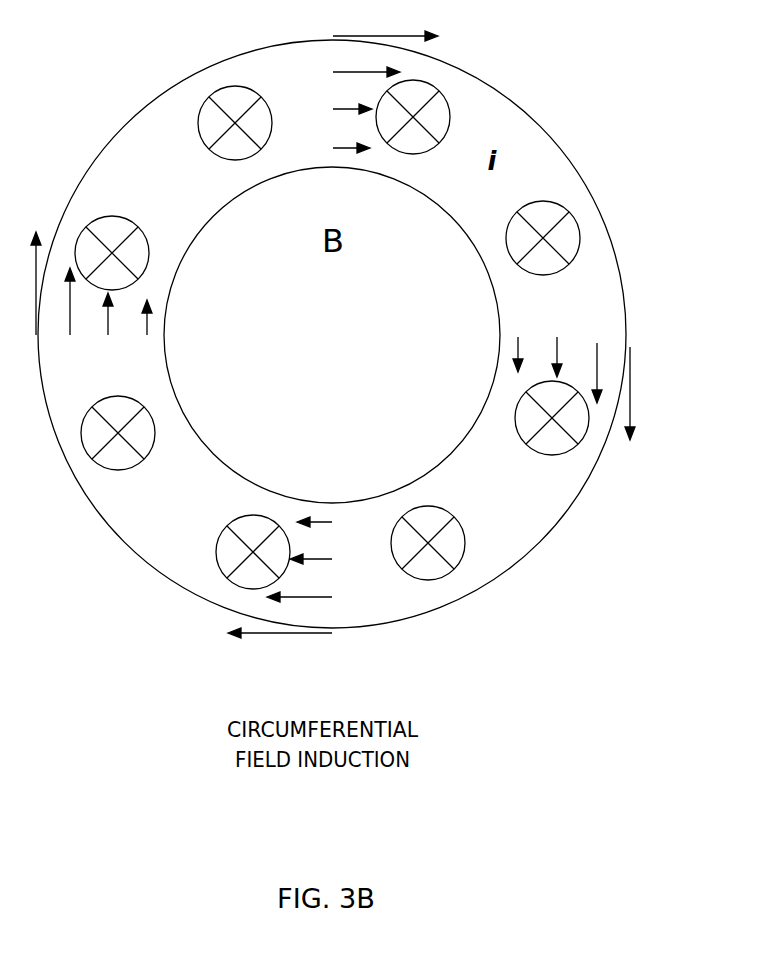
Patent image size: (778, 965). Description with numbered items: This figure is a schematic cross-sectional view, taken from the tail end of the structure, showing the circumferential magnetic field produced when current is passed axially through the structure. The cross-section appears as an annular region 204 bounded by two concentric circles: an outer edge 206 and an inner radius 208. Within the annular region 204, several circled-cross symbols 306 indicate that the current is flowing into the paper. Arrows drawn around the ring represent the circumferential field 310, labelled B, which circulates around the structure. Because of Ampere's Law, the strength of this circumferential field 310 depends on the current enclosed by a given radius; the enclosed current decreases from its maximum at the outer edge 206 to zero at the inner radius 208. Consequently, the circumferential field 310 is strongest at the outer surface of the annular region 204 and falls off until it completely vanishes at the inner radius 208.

The annular region 204 is at (348, 334).
The outer edge 206 is at (548, 135).
The inner radius 208 is at (447, 210).
The current-into-paper symbols 306 is at (580, 235).
The circumferential field 310 is at (632, 347).